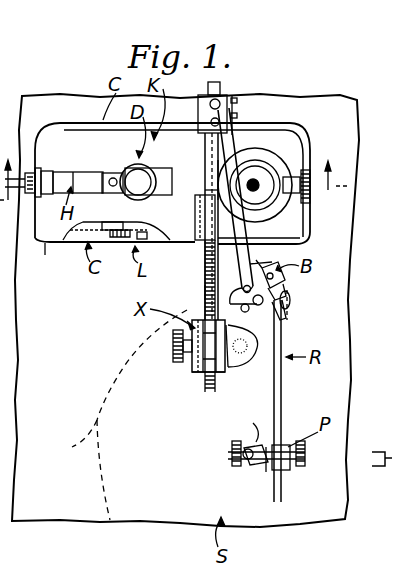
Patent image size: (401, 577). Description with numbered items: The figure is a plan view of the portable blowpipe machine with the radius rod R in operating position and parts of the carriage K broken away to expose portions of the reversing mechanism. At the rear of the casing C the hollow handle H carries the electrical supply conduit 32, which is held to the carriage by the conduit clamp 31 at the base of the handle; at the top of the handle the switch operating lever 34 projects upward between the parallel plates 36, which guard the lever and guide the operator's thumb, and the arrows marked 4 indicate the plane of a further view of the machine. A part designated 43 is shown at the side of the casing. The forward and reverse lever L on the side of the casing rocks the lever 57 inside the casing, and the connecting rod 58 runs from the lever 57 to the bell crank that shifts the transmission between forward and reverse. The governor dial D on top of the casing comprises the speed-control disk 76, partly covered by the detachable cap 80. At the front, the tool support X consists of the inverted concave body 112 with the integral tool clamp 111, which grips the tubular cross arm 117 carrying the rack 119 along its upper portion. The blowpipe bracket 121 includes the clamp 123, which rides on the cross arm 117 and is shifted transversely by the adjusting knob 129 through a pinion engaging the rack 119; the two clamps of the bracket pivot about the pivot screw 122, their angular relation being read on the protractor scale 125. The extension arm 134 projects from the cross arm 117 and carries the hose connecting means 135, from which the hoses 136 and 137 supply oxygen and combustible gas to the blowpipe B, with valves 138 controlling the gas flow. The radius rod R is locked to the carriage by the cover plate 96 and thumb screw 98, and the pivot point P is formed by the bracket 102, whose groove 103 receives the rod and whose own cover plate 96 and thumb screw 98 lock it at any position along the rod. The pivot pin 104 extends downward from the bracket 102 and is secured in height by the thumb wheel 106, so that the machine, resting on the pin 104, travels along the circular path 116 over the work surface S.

The section line 4- 4 is at (173, 189).
The conduit clamp 31 is at (50, 170).
The electrical supply conduit 32 is at (30, 170).
The operating lever 34 is at (133, 160).
The parallel plates 36 is at (113, 178).
The frame side wall 43 is at (45, 248).
The lever 57 is at (100, 236).
The connecting rod 58 is at (160, 292).
The speed-control disk 76 is at (124, 199).
The cap 80 is at (204, 193).
The cover plate 96 is at (306, 200).
The thumb screw 98 is at (292, 471).
The bracket 102 is at (231, 424).
The groove 103 is at (266, 476).
The pivot pin 104 is at (240, 468).
The thumb wheel 106 is at (230, 458).
The tool clamp 111 is at (200, 211).
The concave body 112 is at (260, 172).
The circular path 116 is at (71, 470).
The cross arm 117 is at (196, 289).
The rack 119 is at (206, 258).
The blowpipe bracket 121 is at (247, 370).
The pivot screw 122 is at (265, 345).
The clamp 123 is at (191, 371).
The protractor scale 125 is at (226, 372).
The adjusting knob 129 is at (145, 345).
The extension arm 134 is at (208, 165).
The hose connecting means 135 is at (230, 95).
The hose 136 is at (238, 108).
The hose 137 is at (217, 183).
The valves 138 is at (272, 283).